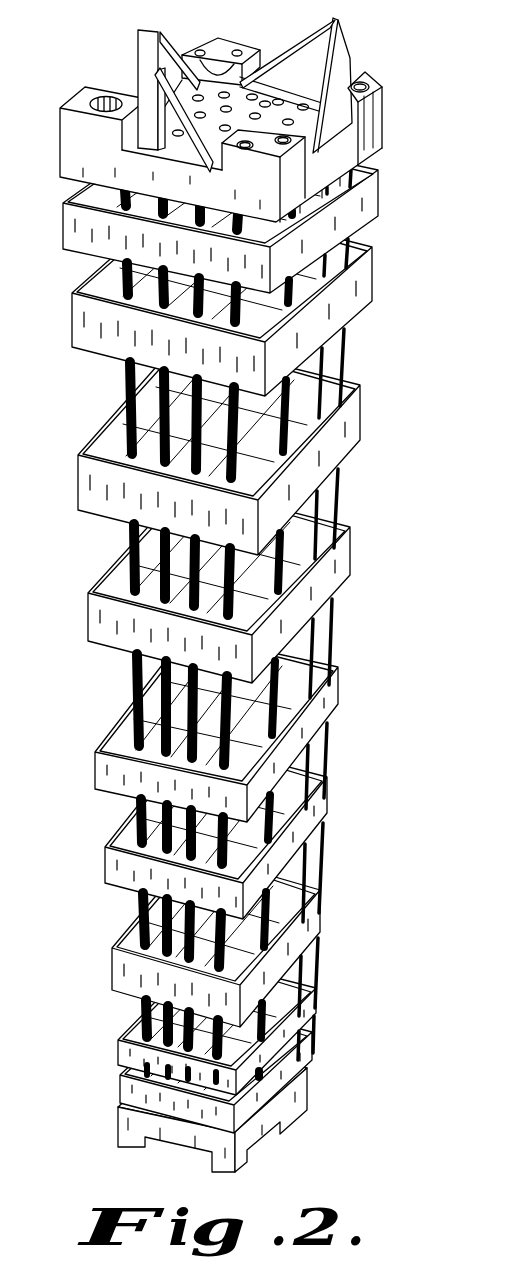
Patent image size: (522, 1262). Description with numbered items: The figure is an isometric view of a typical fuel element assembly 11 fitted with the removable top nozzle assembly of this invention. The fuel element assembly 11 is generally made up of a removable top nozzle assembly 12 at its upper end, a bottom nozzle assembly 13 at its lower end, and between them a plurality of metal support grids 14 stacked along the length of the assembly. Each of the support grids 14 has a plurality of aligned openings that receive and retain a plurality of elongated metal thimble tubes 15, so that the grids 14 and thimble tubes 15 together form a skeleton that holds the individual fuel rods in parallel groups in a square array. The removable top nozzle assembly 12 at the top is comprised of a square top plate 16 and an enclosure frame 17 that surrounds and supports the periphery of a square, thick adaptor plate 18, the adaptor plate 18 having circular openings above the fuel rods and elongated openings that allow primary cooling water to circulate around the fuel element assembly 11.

The fuel element assembly 11 is at (408, 408).
The removable top nozzle assembly 12 is at (378, 84).
The bottom nozzle assembly 13 is at (306, 1092).
The metal support grid 14 is at (369, 203).
The elongated metal thimble tube 15 is at (126, 390).
The square top plate 16 is at (121, 93).
The enclosure frame 17 is at (61, 143).
The adaptor plate 18 is at (265, 103).